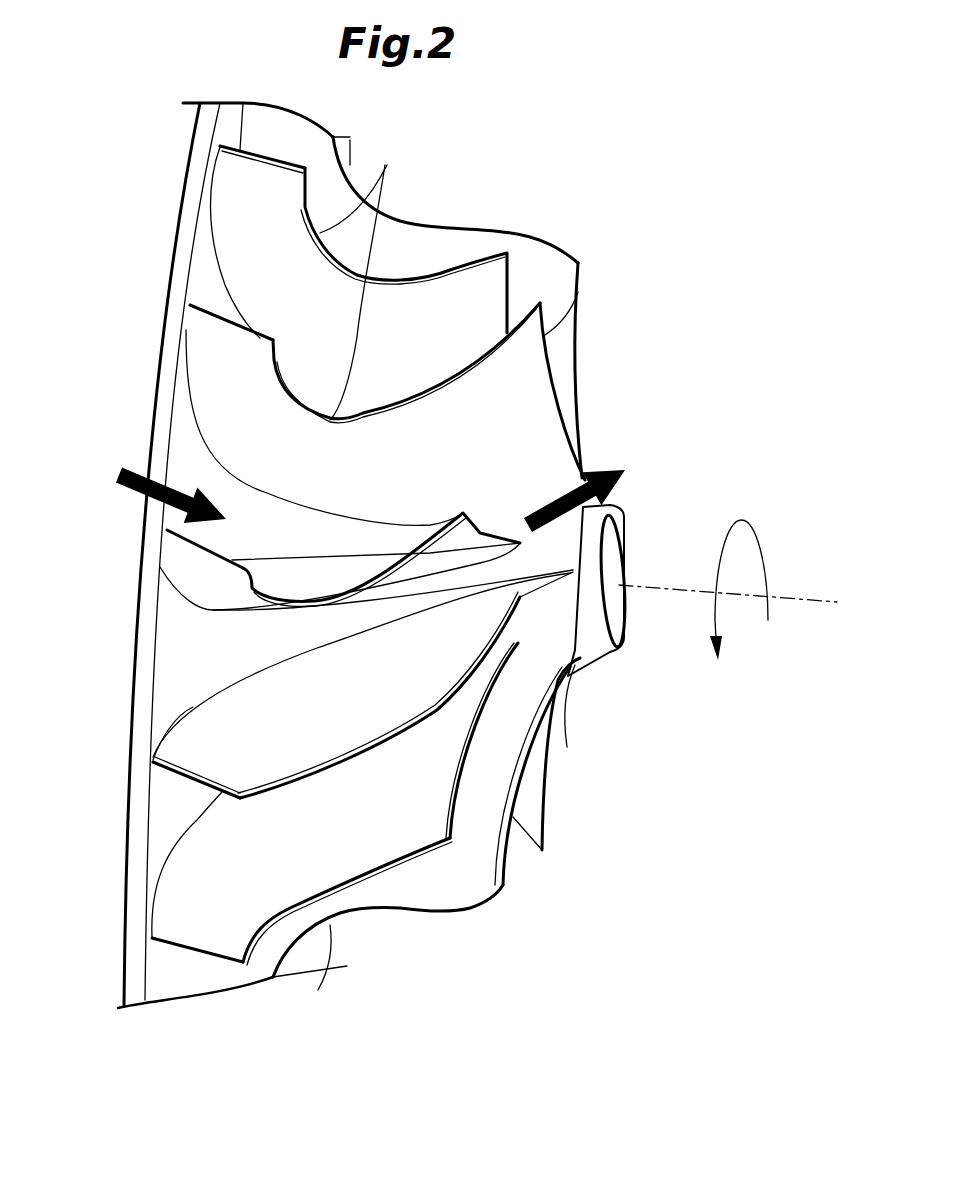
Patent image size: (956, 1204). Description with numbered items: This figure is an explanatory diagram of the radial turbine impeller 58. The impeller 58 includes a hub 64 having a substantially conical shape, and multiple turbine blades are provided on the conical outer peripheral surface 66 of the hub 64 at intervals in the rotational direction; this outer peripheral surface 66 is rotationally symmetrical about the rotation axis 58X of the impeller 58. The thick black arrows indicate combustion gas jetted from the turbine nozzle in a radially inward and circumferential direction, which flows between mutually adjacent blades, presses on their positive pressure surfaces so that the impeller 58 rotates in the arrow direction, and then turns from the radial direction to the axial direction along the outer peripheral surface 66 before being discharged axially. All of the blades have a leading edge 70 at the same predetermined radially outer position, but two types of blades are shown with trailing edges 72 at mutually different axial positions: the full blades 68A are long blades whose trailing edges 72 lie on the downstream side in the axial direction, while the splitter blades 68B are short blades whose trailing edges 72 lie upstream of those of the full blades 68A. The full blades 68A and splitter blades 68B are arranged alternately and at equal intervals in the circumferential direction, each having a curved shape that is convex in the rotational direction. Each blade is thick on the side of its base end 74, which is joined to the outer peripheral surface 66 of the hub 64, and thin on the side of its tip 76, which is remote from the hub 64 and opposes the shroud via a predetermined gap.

The radial turbine impeller 58 is at (140, 207).
The rotation axis 58X is at (822, 595).
The hub 64 is at (145, 381).
The outer peripheral surface 66 is at (197, 653).
The full blade 68A is at (535, 424).
The splitter blade 68B is at (432, 300).
The leading edge 70 is at (257, 152).
The trailing edge 72 is at (510, 303).
The base end 74 is at (207, 443).
The tip 76 is at (315, 1020).